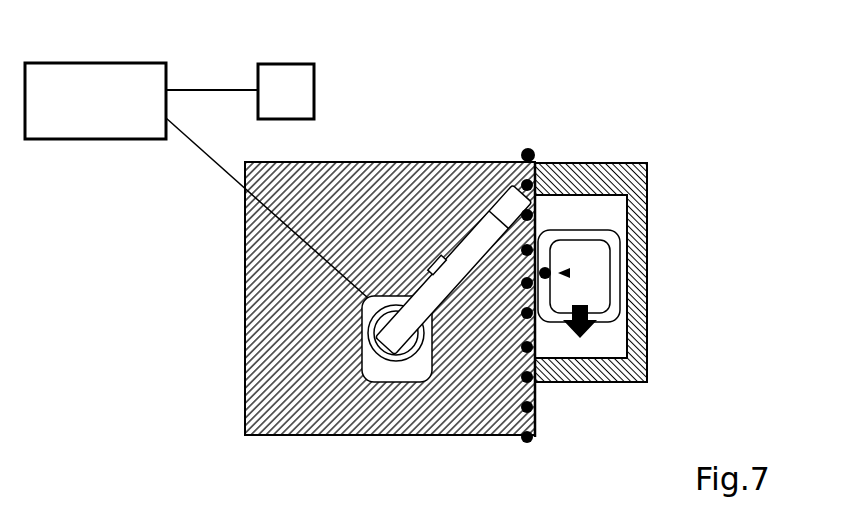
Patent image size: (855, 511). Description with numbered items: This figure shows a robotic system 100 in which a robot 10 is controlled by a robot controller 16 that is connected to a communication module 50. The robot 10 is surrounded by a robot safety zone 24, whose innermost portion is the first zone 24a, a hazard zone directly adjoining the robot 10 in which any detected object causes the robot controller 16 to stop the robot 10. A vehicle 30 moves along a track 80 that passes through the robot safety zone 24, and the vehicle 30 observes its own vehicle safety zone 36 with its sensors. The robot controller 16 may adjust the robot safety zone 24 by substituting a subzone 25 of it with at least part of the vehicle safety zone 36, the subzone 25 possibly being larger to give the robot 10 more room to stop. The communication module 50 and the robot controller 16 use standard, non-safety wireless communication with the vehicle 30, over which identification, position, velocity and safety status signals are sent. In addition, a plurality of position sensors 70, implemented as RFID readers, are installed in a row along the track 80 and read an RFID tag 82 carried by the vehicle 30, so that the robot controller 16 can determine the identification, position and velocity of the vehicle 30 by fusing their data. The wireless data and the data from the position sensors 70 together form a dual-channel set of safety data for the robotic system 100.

The robot 10 is at (348, 372).
The robot controller 16 is at (113, 140).
The robot safety zone 24 is at (240, 322).
The first zone 24a is at (265, 240).
The subzone 25 is at (655, 195).
The vehicle 30 is at (621, 249).
The vehicle safety zone 36 is at (645, 332).
The communication module 50 is at (315, 82).
The position sensors 70 is at (548, 155).
The track 80 is at (597, 325).
The RFID tag 82 is at (570, 273).
The robotic system 100 is at (585, 108).